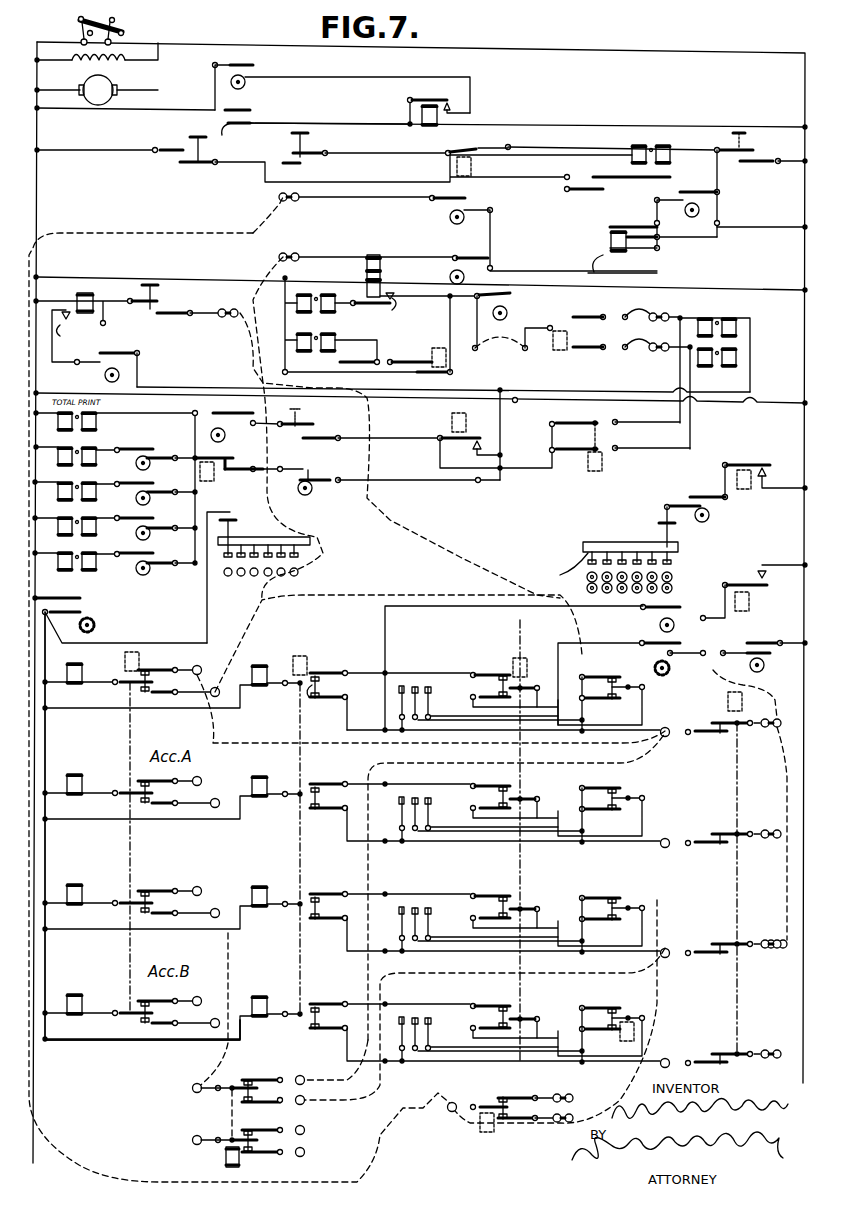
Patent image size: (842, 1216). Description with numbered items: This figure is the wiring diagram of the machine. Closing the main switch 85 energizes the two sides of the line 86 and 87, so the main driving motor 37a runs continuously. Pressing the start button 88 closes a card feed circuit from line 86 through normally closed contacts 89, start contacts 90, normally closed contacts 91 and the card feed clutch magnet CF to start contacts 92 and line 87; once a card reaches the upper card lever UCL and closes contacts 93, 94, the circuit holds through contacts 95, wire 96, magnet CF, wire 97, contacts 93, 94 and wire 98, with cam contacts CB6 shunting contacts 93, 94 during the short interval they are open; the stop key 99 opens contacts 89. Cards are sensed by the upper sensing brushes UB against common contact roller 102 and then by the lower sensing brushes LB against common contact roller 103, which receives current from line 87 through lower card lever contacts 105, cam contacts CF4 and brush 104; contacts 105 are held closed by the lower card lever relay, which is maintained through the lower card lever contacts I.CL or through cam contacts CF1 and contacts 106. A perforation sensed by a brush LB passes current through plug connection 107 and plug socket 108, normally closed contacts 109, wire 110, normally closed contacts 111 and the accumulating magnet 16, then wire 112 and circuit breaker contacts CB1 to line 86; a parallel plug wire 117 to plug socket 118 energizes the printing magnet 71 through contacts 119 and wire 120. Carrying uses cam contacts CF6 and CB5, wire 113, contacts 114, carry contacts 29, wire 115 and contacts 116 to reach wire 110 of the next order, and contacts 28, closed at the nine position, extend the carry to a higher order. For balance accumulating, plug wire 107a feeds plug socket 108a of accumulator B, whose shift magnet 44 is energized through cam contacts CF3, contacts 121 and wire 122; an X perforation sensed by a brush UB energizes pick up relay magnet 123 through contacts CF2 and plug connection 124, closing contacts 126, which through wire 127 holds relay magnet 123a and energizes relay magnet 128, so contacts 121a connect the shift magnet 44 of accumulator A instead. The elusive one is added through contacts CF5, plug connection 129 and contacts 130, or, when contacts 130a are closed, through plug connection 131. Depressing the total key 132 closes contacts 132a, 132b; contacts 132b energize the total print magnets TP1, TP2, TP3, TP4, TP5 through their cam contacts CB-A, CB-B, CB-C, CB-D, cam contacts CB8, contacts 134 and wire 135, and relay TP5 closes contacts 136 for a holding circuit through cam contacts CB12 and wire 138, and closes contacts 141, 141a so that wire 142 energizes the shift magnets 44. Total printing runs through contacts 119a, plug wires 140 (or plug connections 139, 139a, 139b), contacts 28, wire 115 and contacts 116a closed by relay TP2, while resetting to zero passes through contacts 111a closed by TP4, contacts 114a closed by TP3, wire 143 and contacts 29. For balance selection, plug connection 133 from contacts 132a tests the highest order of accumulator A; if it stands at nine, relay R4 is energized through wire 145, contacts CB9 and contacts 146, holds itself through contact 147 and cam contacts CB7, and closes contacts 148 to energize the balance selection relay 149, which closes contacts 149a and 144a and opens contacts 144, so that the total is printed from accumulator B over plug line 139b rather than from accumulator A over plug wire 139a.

The main switch 85 is at (126, 30).
The main driving motor 37a is at (100, 100).
The stop key 99 is at (190, 138).
The normally closed contacts 89 is at (170, 160).
The line 86 is at (38, 180).
The plug connection 129 is at (262, 217).
The wire 127 is at (117, 277).
The total key 132 is at (140, 289).
The total key contacts 132a is at (155, 316).
The total key contacts 132b is at (305, 441).
The contact 147 is at (79, 336).
The cam contacts CB7 is at (104, 376).
The relay R4 is at (430, 353).
The total print magnet TP1 is at (60, 422).
The total print relay TP2 is at (60, 457).
The total print relay TP3 is at (60, 492).
The total print relay TP4 is at (60, 562).
The total print relay magnet TP5 is at (472, 168).
The cam contacts CB-A is at (150, 450).
The cam contacts CB-B is at (137, 484).
The cam contacts CB-C is at (137, 519).
The cam contacts CB-D is at (137, 554).
The cam contacts CB8 is at (245, 409).
The total print contacts 136 is at (228, 460).
The cam contacts CB12 is at (318, 490).
The wire 138 is at (440, 483).
The contacts 134 is at (485, 441).
The wire 122 is at (503, 398).
The wire 142 is at (520, 472).
The contacts 141 is at (550, 423).
The contacts 141a is at (553, 457).
The contacts 121 is at (573, 315).
The contacts 121a is at (588, 343).
The shift magnet 44 is at (736, 358).
The accumulator A is at (758, 358).
The accumulator B is at (762, 327).
The wire 135 is at (651, 392).
The lower card lever contacts 105 is at (765, 466).
The cam contacts CF4 is at (692, 500).
The brush 104 is at (662, 537).
The common contact roller 103 is at (603, 541).
The lower sensing brushes LB is at (605, 572).
The contacts 146 is at (758, 578).
The cam contacts CB9 is at (670, 612).
The wire 145 is at (387, 626).
The wire 113 is at (558, 643).
The cam contacts CB5 is at (665, 648).
The cam contacts CF6 is at (763, 641).
The plug connection 107 is at (713, 678).
The plug socket 108 is at (780, 714).
The plug wire 107a is at (784, 780).
The plug socket 108a is at (778, 946).
The printing magnet 71 is at (74, 685).
The contacts 119 is at (157, 700).
The contacts 119a is at (155, 670).
The plug socket 118 is at (156, 700).
The accumulating magnet 16 is at (246, 994).
The contacts 111 is at (327, 860).
The contacts 111a is at (328, 676).
The contacts 28 is at (404, 684).
The carry contacts 29 is at (420, 684).
The contacts 114a is at (478, 673).
The contacts 114 is at (480, 690).
The wire 143 is at (467, 717).
The wire 110 is at (500, 731).
The wire 115 is at (615, 726).
The contacts 116 is at (605, 670).
The contacts 116a is at (598, 696).
The contacts 109 is at (706, 729).
The wire 112 is at (83, 712).
The plug wire 117 is at (402, 597).
The plug wires 140 is at (365, 758).
The plug connection 139 is at (230, 950).
The plug wire 139a is at (366, 962).
The plug line 139b is at (452, 969).
The plug connection 131 is at (658, 1008).
The plug connection 133 is at (470, 560).
The plug connection 124 is at (318, 547).
The common contact roller 102 is at (268, 530).
The upper sensing brushes UB is at (261, 573).
The circuit breaker contacts CB1 is at (121, 613).
The wire 120 is at (115, 634).
The balance selection contacts 144 is at (244, 1082).
The balance selection contacts 144a is at (230, 1096).
The balance selection relay 149 is at (253, 1168).
The contacts 149a is at (373, 370).
The contacts 148 is at (415, 371).
The contacts 130 is at (496, 1100).
The contacts 130a is at (510, 1120).
The relay magnet 128 is at (462, 1140).
The pick up relay magnet 123 is at (382, 265).
The relay magnet 123a is at (382, 290).
The contacts 126 is at (390, 312).
The cam contacts CF2 is at (470, 265).
The cam contacts CF3 is at (512, 288).
The cam contacts CF5 is at (475, 206).
The cam contacts CF1 is at (256, 70).
The lower card lever contacts I.CL is at (256, 114).
The contacts 106 is at (460, 101).
The start button 88 is at (308, 139).
The start contacts 90 is at (314, 164).
The normally closed contacts 91 is at (482, 148).
The wire 96 is at (450, 168).
The start contacts 92 is at (730, 154).
The line 87 is at (805, 100).
The contacts 95 is at (607, 185).
The wire 97 is at (722, 189).
The cam contacts CB6 is at (703, 200).
The contacts 93 is at (645, 228).
The contacts 94 is at (608, 228).
The wire 98 is at (752, 228).
The upper card lever UCL is at (622, 252).
The card feed clutch magnet CF is at (643, 152).